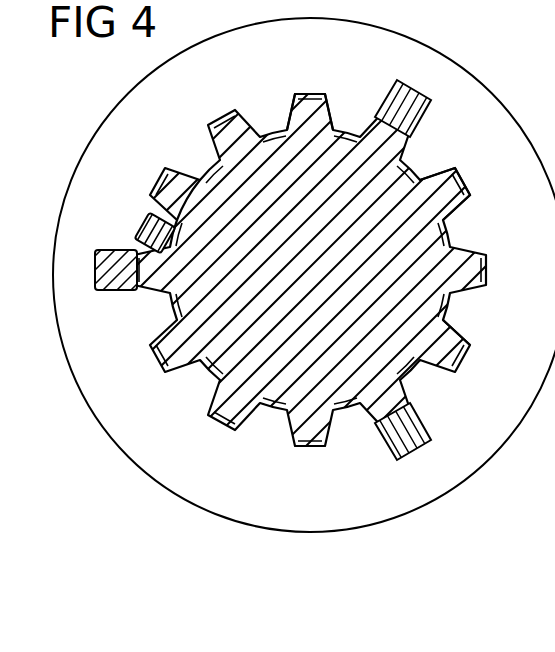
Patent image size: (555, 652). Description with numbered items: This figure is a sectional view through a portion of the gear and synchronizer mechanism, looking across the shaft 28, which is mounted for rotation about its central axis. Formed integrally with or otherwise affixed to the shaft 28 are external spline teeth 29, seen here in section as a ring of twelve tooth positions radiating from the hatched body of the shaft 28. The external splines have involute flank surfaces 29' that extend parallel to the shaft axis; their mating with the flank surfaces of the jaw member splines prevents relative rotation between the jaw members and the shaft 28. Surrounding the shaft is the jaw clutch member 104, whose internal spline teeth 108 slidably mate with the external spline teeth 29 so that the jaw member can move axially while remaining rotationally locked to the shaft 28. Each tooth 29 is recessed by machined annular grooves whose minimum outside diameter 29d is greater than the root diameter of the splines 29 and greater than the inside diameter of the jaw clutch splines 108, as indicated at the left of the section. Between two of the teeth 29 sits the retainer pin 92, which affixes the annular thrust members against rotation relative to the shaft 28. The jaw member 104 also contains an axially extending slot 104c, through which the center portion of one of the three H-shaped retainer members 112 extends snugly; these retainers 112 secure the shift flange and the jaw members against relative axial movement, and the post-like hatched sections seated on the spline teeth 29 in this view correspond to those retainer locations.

The jaw clutch member 104 is at (346, 548).
The axially extending slot 104c is at (416, 118).
The spline teeth 29 is at (479, 207).
The involute flank surfaces 29' is at (260, 94).
The minimum outside diameter 29d is at (143, 292).
The shaft 28 is at (195, 156).
The retainer pin 92 is at (143, 236).
The internal spline teeth 108 is at (480, 317).
The H-shaped retainer member 112 is at (541, 600).